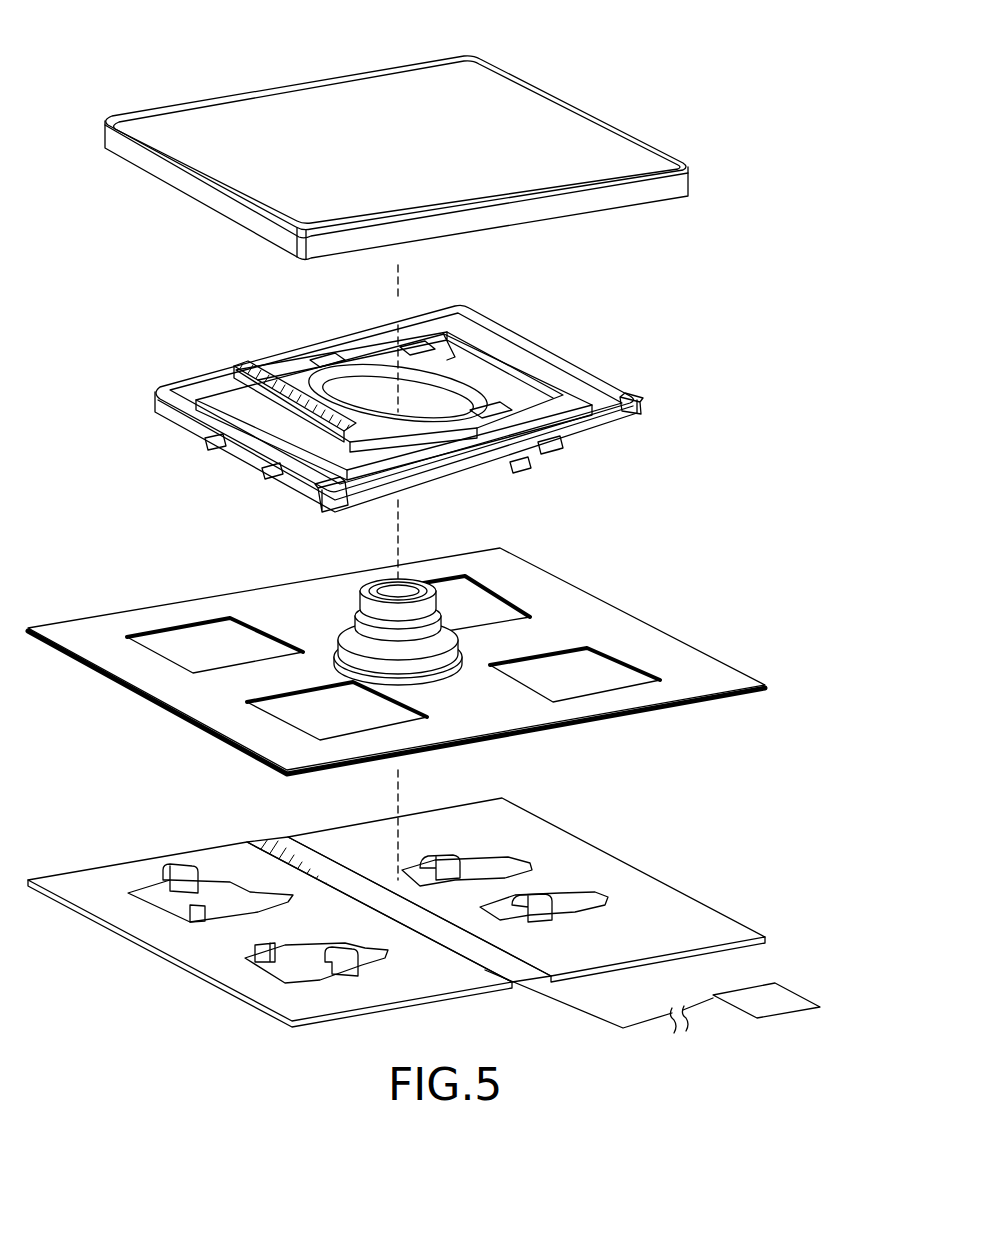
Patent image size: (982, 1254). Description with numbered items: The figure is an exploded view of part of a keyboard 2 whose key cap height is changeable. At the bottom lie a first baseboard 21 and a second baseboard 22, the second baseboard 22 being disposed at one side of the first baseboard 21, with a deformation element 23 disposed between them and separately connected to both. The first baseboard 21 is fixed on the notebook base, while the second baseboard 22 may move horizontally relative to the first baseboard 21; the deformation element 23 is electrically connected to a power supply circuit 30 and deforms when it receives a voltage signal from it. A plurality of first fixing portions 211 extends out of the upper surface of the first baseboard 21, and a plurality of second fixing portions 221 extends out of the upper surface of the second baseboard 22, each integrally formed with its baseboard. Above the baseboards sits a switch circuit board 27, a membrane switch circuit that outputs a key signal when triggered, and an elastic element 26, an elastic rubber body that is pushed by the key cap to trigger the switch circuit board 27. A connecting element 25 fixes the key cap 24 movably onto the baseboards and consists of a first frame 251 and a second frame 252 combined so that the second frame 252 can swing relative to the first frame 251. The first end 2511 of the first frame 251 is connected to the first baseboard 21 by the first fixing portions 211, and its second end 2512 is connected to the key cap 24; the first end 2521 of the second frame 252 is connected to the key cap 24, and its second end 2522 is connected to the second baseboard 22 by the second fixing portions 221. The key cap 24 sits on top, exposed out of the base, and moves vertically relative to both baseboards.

The keyboard 2 is at (239, 38).
The key cap 24 is at (548, 115).
The connecting element 25 is at (422, 431).
The first frame 251 is at (577, 383).
The first end of the first frame 2511 is at (318, 492).
The second end of the first frame 2512 is at (641, 410).
The second frame 252 is at (487, 390).
The first end of the second frame 2521 is at (250, 365).
The second end of the second frame 2522 is at (556, 455).
The elastic element 26 is at (357, 640).
The switch circuit board 27 is at (572, 613).
The first baseboard 21 is at (270, 926).
The first fixing portions 211 is at (182, 875).
The second baseboard 22 is at (526, 915).
The second fixing portions 221 is at (440, 860).
The deformation element 23 is at (293, 860).
The power supply circuit 30 is at (780, 1000).